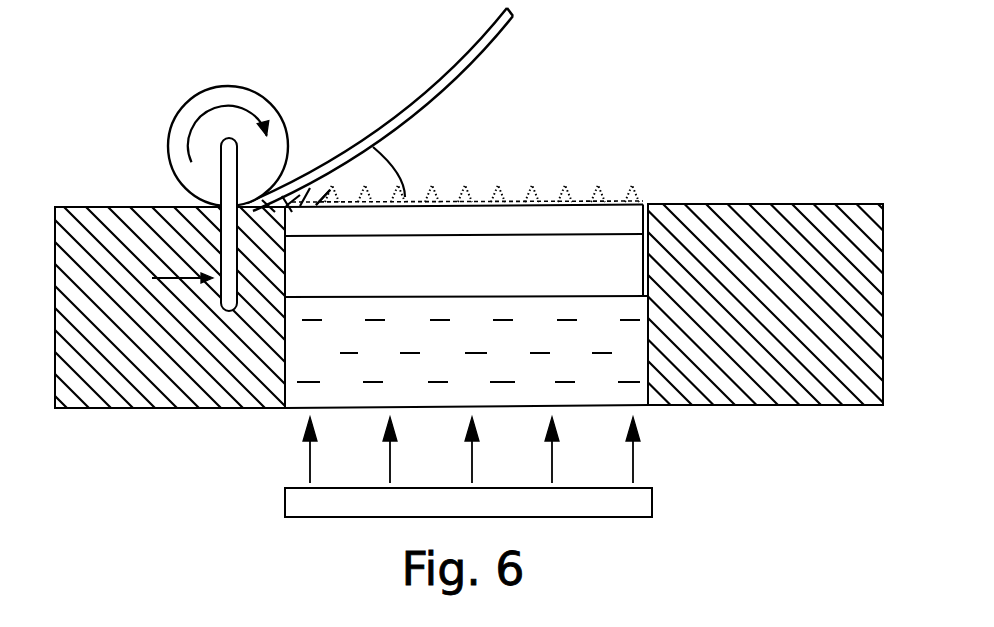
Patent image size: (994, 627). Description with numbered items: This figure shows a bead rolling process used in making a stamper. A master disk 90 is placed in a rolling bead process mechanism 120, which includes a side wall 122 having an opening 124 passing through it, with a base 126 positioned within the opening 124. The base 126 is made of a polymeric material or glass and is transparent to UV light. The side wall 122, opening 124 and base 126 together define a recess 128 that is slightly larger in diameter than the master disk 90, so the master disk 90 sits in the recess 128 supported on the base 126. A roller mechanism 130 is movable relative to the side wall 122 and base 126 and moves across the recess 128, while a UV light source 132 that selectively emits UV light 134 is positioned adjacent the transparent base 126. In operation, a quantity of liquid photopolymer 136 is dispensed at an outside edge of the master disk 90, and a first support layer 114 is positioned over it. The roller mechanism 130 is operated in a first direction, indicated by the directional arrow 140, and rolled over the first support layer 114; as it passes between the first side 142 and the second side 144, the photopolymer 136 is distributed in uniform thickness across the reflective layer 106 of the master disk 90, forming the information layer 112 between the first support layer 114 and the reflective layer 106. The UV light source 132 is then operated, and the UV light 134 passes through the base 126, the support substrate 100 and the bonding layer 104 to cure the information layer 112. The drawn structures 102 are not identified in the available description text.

The master disk 90 is at (616, 150).
The support substrate 100 is at (625, 283).
The microstructured features 102 is at (530, 198).
The bonding layer 104 is at (647, 228).
The reflective layer 106 is at (637, 187).
The information layer 112 is at (368, 178).
The first support layer 114 is at (438, 85).
The rolling bead process mechanism 120 is at (764, 184).
The side wall 122 is at (90, 387).
The opening 124 is at (648, 285).
The base 126 is at (632, 394).
The recess 128 is at (479, 170).
The roller mechanism 130 is at (176, 80).
The UV light source 132 is at (653, 502).
The UV light 134 is at (310, 455).
The photopolymer 136 is at (318, 150).
The directional arrow 140 is at (172, 276).
The first side 142 is at (114, 207).
The second side 144 is at (712, 204).